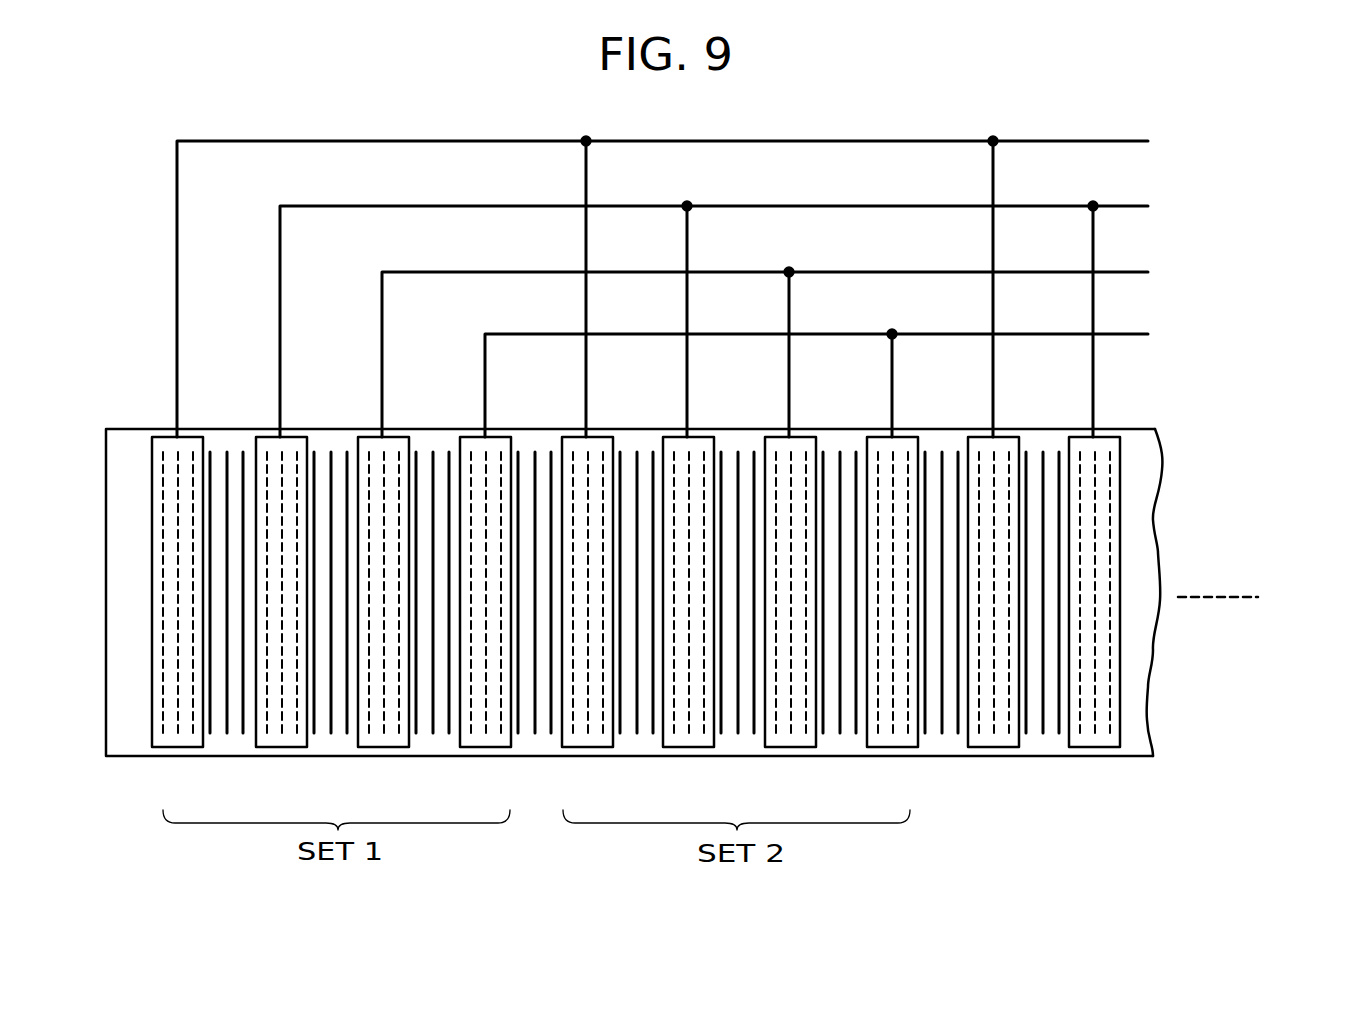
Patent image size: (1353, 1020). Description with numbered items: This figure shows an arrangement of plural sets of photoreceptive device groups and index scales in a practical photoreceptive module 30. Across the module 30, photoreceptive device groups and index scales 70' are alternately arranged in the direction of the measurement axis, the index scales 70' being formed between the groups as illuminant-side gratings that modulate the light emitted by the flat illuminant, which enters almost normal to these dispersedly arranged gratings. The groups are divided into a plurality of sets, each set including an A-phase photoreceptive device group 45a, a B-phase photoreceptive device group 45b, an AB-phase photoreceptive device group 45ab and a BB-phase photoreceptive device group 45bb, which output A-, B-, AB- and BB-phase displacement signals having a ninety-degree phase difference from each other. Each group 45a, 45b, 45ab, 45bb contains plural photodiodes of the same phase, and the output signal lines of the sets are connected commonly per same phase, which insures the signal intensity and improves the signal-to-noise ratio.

The photoreceptive module 30 is at (137, 415).
The index scales 70' is at (633, 550).
The A-phase photoreceptive device group 45a is at (180, 740).
The B-phase photoreceptive device group 45b is at (283, 740).
The AB-phase photoreceptive device group 45ab is at (376, 740).
The BB-phase photoreceptive device group 45bb is at (485, 740).